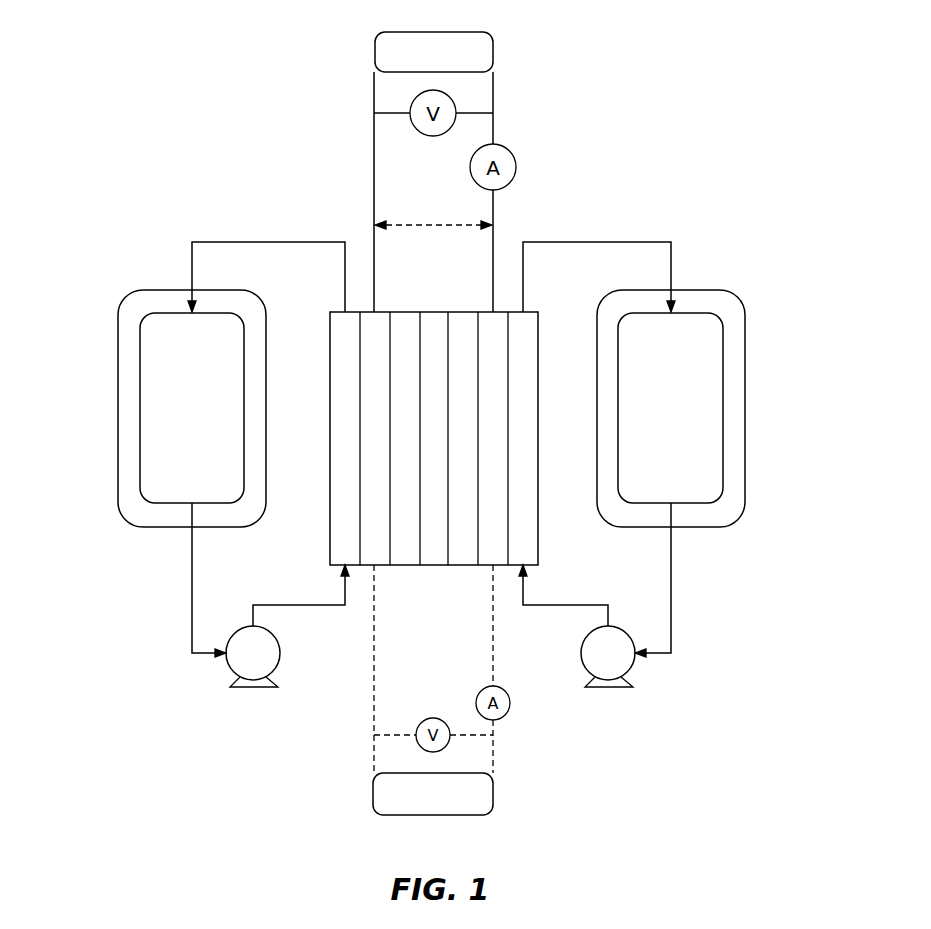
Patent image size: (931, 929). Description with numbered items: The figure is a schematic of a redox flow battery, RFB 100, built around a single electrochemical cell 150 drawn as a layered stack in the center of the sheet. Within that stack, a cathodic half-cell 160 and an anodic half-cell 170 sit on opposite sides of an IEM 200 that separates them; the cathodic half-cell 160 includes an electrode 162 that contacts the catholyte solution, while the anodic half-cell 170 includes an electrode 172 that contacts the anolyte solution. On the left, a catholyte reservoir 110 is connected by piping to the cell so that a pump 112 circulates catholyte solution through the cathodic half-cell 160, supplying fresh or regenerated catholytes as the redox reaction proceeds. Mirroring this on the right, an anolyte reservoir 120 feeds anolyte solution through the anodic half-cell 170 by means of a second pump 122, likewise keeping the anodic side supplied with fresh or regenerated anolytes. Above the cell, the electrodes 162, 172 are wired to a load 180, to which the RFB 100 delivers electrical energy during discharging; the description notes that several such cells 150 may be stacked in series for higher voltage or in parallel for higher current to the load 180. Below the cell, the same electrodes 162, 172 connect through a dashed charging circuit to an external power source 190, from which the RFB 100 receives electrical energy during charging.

The RFB 100 is at (212, 68).
The catholyte reservoir 110 is at (127, 288).
The pump 112 is at (230, 668).
The anolyte reservoir 120 is at (743, 288).
The anolyte pump 122 is at (632, 668).
The electrochemical cell 150 is at (408, 190).
The cathodic half-cell 160 is at (367, 575).
The electrode 162 is at (408, 575).
The anodic half-cell 170 is at (487, 575).
The electrode 172 is at (460, 575).
The load 180 is at (466, 32).
The external power source 190 is at (398, 815).
The IEM 200 is at (432, 461).